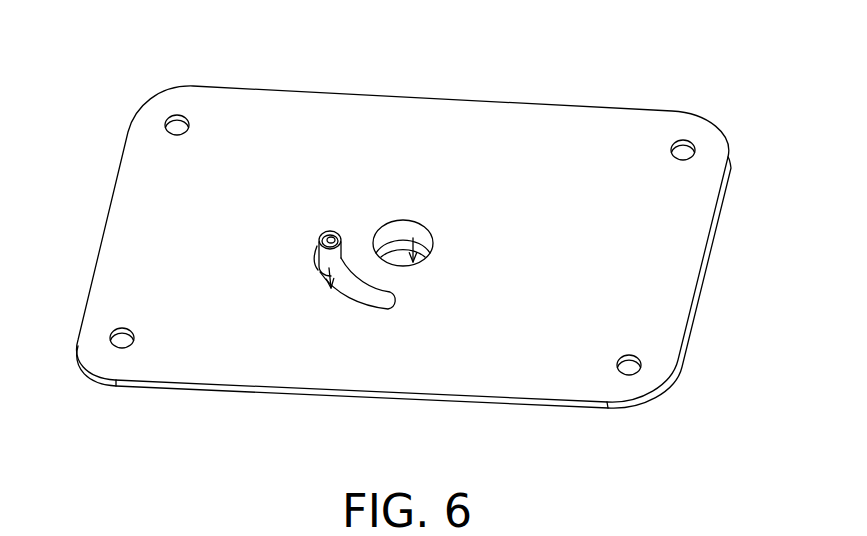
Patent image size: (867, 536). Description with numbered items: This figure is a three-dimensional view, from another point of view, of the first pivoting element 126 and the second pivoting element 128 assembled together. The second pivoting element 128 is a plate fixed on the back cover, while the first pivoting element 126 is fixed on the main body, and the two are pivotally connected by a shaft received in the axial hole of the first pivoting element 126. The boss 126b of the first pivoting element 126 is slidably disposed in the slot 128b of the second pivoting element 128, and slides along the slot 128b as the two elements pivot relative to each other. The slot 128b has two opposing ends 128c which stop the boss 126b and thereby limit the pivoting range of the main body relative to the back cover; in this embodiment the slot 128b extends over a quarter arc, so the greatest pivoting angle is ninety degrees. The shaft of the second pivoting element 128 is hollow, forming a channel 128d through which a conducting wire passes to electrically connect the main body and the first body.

The second pivoting element 128 is at (707, 279).
The slot 128b is at (320, 270).
The ends of the slot 128c is at (323, 232).
The channel 128d is at (432, 252).
The first pivoting element 126 is at (363, 295).
The boss 126b is at (319, 250).